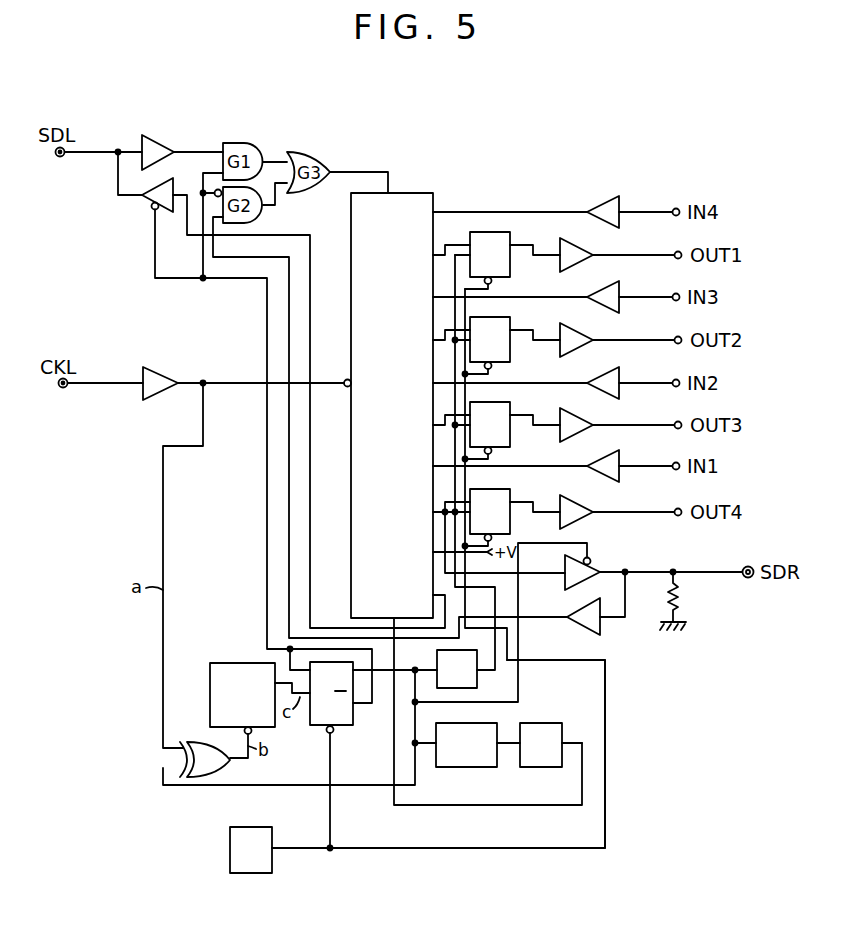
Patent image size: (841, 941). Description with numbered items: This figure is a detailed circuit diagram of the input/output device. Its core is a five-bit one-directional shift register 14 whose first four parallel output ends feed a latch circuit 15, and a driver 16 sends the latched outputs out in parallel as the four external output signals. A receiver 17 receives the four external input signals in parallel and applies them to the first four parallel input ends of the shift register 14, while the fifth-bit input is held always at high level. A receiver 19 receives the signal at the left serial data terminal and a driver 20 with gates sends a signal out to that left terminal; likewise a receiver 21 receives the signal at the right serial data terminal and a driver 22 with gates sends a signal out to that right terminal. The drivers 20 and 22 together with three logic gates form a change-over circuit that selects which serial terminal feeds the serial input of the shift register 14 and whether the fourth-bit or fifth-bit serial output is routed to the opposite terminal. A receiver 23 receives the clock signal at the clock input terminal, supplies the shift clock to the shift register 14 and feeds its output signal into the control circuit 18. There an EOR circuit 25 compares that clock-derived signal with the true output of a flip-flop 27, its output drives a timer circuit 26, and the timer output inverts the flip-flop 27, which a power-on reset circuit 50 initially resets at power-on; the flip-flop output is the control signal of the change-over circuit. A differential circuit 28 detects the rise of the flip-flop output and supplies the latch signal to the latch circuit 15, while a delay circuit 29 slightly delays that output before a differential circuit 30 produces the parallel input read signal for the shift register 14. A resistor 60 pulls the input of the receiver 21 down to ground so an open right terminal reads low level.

The shift register 14 is at (412, 193).
The latch circuit 15 is at (506, 233).
The driver 16 is at (581, 248).
The receiver 17 is at (597, 200).
The control circuit 18 is at (590, 697).
The receiver 19 is at (160, 134).
The driver with gates 20 is at (147, 203).
The receiver 21 is at (598, 626).
The driver with gates 22 is at (596, 560).
The receiver 23 is at (166, 352).
The EOR circuit 25 is at (196, 742).
The timer circuit 26 is at (234, 663).
The flip-flop 27 is at (339, 726).
The differential circuit 28 is at (473, 684).
The delay circuit 29 is at (478, 767).
The differential circuit 30 is at (542, 767).
The power-on reset circuit 50 is at (230, 843).
The resistor 60 is at (684, 596).